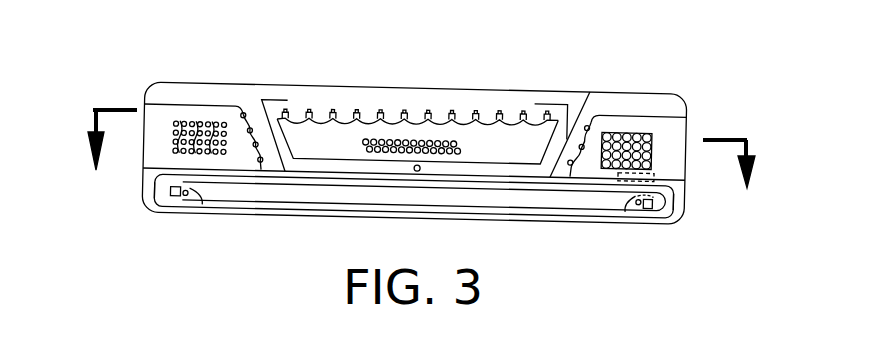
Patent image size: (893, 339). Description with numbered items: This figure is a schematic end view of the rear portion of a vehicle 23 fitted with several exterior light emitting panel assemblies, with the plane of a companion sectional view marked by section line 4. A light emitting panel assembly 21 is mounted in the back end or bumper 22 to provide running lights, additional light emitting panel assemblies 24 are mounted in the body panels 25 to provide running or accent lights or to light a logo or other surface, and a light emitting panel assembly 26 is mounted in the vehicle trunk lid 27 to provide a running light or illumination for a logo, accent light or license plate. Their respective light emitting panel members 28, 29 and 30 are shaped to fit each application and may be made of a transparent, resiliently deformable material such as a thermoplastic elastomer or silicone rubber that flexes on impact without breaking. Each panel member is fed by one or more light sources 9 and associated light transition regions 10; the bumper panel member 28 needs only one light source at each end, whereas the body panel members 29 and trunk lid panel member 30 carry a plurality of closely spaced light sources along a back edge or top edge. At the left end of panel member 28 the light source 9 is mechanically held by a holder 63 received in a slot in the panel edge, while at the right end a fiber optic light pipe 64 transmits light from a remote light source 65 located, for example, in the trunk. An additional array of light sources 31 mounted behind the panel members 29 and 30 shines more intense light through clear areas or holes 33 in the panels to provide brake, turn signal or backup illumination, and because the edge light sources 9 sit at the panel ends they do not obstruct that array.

The section line 4- 4 is at (420, 170).
The light source 9 is at (191, 196).
The light transition region 10 is at (325, 115).
The light emitting panel assembly 21 is at (288, 207).
The back end or bumper 22 is at (485, 216).
The vehicle 23 is at (138, 86).
The light emitting panel assemblies 24 is at (190, 101).
The body panels 25 is at (178, 88).
The light emitting panel assembly 26 is at (441, 111).
The vehicle trunk lid 27 is at (481, 100).
The light emitting panel member 28 is at (413, 198).
The light emitting panel members 29 is at (153, 147).
The light emitting panel member 30 is at (402, 135).
The array of light sources 31 is at (166, 131).
The clear areas or holes 33 is at (657, 140).
The holder 63 is at (172, 198).
The fiber optic light pipe 64 is at (652, 210).
The remote light source 65 is at (655, 177).